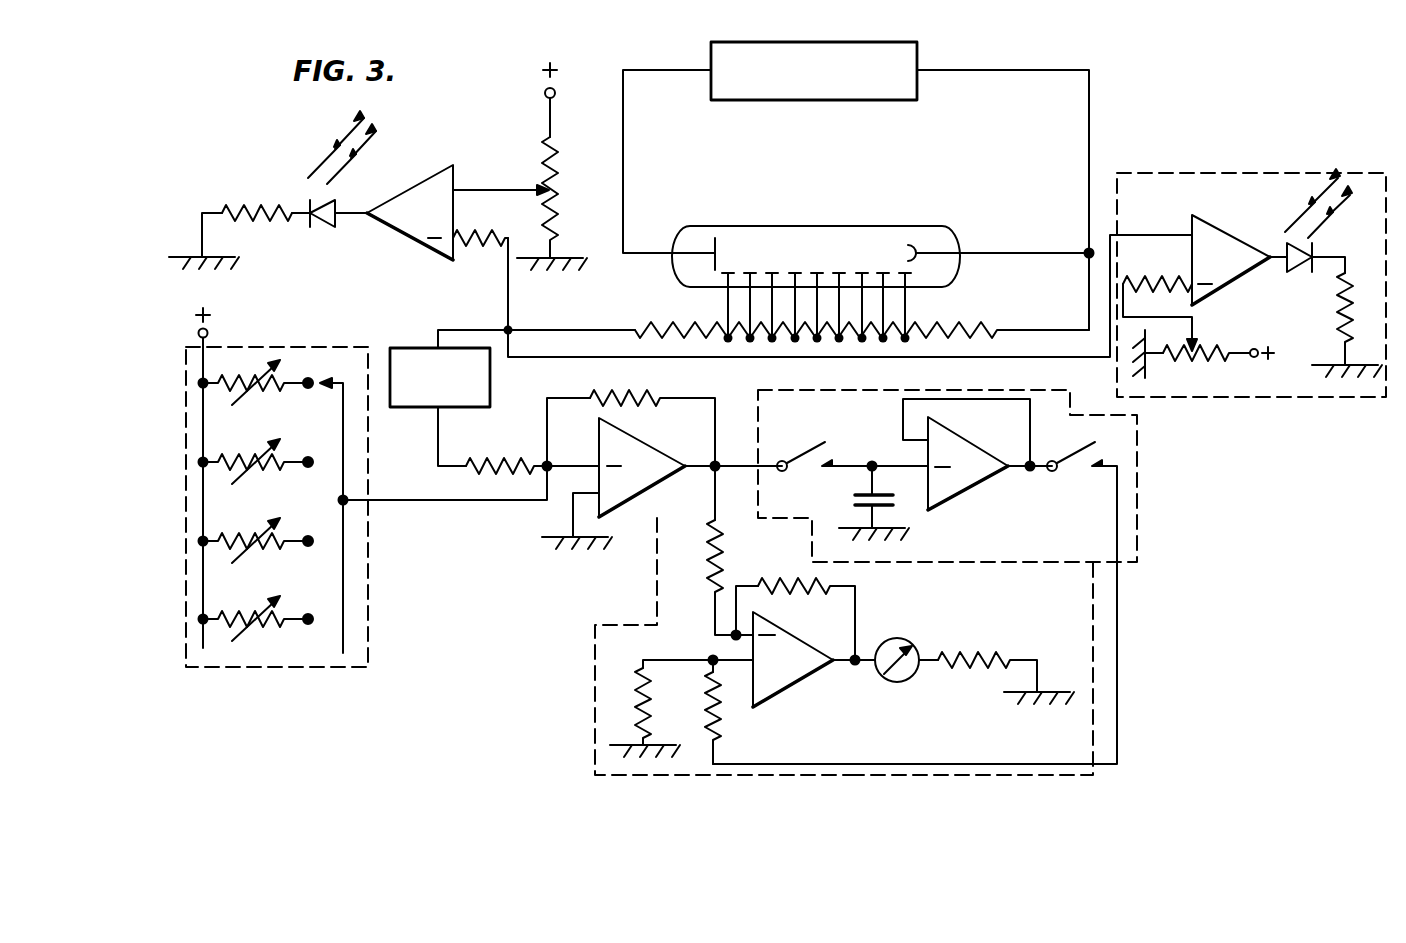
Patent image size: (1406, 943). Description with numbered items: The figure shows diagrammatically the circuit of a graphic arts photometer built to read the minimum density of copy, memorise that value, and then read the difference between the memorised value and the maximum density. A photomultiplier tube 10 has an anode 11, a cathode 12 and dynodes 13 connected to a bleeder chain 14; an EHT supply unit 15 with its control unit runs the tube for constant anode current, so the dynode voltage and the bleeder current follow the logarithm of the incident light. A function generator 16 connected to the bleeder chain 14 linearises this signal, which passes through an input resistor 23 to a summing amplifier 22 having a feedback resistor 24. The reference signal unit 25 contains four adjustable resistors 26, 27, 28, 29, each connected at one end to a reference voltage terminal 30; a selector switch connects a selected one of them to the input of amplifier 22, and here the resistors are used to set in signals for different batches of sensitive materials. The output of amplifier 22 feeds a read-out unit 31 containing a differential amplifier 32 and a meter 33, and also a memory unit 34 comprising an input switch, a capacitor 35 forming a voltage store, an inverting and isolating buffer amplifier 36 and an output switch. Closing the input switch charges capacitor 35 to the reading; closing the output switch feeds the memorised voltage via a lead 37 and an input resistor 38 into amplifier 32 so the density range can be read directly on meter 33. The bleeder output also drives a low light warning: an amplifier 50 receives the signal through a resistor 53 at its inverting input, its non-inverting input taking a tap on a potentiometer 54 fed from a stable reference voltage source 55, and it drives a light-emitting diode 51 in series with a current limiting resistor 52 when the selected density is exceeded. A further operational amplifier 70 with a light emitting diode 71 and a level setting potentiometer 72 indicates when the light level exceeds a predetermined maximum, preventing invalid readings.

The photomultiplier tube 10 is at (958, 267).
The anode 11 is at (712, 261).
The cathode 12 is at (914, 262).
The dynodes 13 is at (817, 271).
The bleeder chain 14 is at (840, 343).
The EHT supply unit 15 is at (917, 58).
The function generator 16 is at (490, 388).
The summing amplifier 22 is at (638, 447).
The input resistor 23 is at (494, 461).
The feedback resistor 24 is at (638, 395).
The reference signal unit 25 is at (355, 668).
The adjustable resistor 26 is at (240, 378).
The adjustable resistor 27 is at (240, 457).
The adjustable resistor 28 is at (240, 536).
The adjustable resistor 29 is at (240, 615).
The terminal 30 is at (208, 331).
The read-out unit 31 is at (595, 697).
The differential amplifier 32 is at (776, 629).
The meter 33 is at (913, 645).
The memory unit 34 is at (1137, 437).
The capacitor 35 is at (859, 495).
The buffer amplifier 36 is at (968, 446).
The lead 37 is at (1117, 731).
The input resistor 38 is at (718, 730).
The amplifier 50 is at (431, 180).
The light-emitting diode 51 is at (329, 228).
The current limiting resistor 52 is at (247, 208).
The resistor 53 is at (482, 243).
The potentiometer 54 is at (543, 150).
The stable reference voltage source 55 is at (545, 93).
The operational amplifier 70 is at (1228, 239).
The light emitting diode 71 is at (1314, 249).
The level setting potentiometer 72 is at (1206, 360).